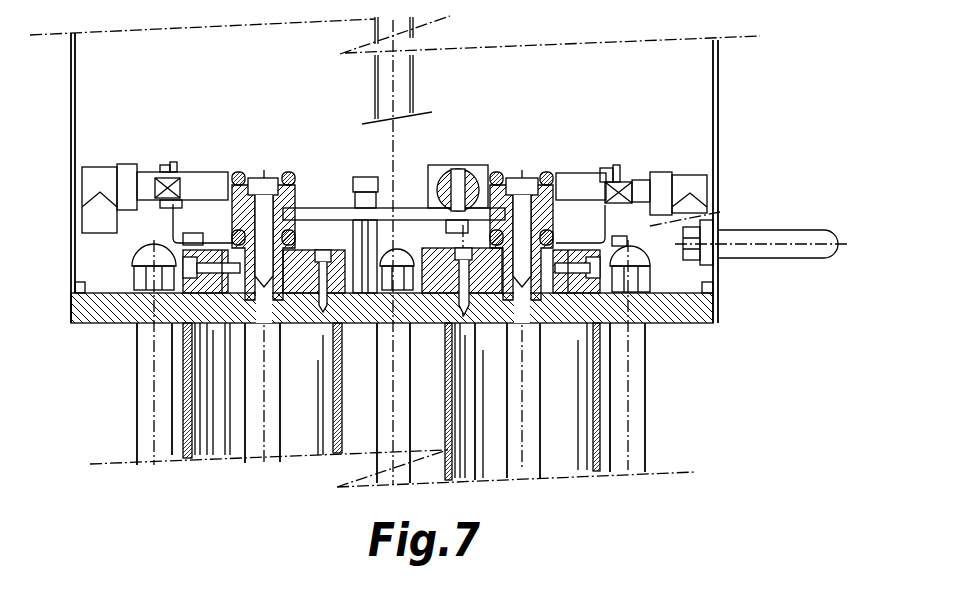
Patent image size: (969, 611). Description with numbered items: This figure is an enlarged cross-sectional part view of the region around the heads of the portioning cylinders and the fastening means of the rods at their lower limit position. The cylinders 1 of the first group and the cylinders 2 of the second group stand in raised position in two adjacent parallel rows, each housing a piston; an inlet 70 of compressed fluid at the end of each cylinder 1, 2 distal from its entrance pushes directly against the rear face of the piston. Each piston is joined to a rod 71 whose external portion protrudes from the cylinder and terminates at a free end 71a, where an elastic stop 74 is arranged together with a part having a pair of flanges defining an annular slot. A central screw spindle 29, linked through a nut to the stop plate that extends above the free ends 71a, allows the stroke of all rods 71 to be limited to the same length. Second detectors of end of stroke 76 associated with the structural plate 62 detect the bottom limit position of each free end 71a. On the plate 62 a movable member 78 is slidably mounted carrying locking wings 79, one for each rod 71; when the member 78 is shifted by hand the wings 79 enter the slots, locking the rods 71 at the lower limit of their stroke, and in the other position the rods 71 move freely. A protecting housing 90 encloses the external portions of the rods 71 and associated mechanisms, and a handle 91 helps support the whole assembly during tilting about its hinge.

The cylinder 1 is at (182, 380).
The cylinder 2 is at (600, 396).
The central screw spindle 29 is at (407, 84).
The structural plate 62 is at (708, 312).
The inlet 70 is at (178, 328).
The rod 71 is at (250, 413).
The free end 71a is at (294, 170).
The elastic stop 74 is at (241, 172).
The second detector of end of stroke 76 is at (196, 172).
The movable member 78 is at (470, 168).
The locking wing 79 is at (326, 207).
The protecting housing 90 is at (718, 98).
The handle 91 is at (782, 236).